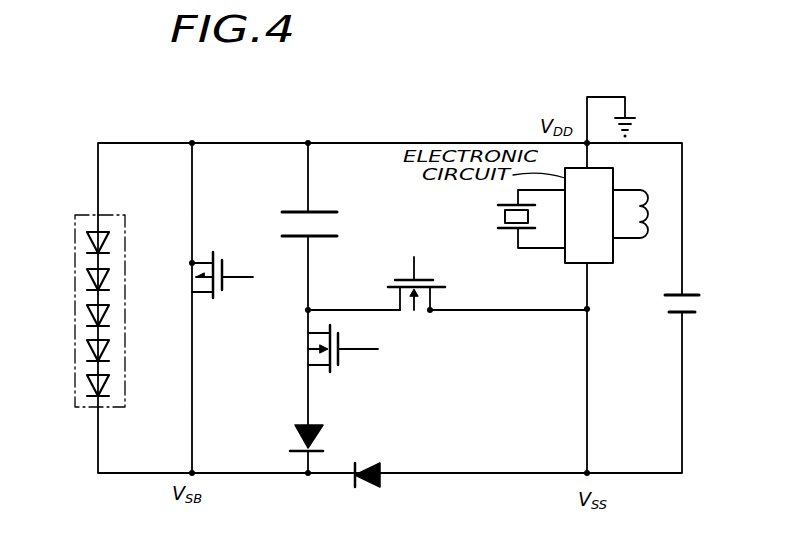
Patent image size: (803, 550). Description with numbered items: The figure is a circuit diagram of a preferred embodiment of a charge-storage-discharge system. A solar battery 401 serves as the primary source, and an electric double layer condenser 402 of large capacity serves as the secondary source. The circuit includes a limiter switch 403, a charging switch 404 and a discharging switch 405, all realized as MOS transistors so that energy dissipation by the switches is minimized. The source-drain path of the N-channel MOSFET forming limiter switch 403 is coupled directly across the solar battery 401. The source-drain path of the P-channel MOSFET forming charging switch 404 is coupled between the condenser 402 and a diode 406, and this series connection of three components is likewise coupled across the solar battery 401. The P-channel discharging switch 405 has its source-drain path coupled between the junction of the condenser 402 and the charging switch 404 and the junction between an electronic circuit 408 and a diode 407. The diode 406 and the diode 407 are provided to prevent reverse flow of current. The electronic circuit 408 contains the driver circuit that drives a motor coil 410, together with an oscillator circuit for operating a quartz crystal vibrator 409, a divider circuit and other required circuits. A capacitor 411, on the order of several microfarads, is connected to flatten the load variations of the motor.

The solar battery 401 is at (76, 214).
The electric double layer condenser 402 is at (288, 228).
The limiter switch 403 is at (222, 300).
The charging switch 404 is at (337, 372).
The discharging switch 405 is at (435, 282).
The diode 406 is at (320, 435).
The diode 407 is at (368, 468).
The electronic circuit 408 is at (589, 215).
The quartz crystal vibrator 409 is at (500, 223).
The motor coil 410 is at (652, 218).
The capacitor 411 is at (692, 302).